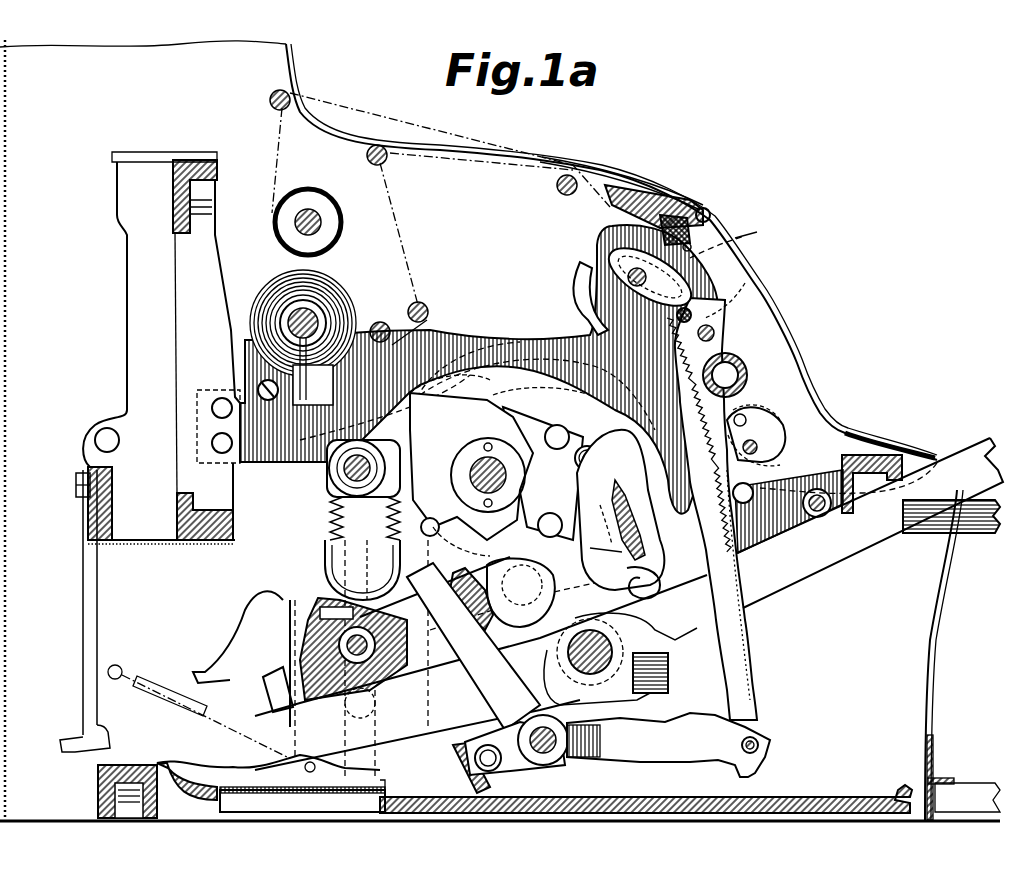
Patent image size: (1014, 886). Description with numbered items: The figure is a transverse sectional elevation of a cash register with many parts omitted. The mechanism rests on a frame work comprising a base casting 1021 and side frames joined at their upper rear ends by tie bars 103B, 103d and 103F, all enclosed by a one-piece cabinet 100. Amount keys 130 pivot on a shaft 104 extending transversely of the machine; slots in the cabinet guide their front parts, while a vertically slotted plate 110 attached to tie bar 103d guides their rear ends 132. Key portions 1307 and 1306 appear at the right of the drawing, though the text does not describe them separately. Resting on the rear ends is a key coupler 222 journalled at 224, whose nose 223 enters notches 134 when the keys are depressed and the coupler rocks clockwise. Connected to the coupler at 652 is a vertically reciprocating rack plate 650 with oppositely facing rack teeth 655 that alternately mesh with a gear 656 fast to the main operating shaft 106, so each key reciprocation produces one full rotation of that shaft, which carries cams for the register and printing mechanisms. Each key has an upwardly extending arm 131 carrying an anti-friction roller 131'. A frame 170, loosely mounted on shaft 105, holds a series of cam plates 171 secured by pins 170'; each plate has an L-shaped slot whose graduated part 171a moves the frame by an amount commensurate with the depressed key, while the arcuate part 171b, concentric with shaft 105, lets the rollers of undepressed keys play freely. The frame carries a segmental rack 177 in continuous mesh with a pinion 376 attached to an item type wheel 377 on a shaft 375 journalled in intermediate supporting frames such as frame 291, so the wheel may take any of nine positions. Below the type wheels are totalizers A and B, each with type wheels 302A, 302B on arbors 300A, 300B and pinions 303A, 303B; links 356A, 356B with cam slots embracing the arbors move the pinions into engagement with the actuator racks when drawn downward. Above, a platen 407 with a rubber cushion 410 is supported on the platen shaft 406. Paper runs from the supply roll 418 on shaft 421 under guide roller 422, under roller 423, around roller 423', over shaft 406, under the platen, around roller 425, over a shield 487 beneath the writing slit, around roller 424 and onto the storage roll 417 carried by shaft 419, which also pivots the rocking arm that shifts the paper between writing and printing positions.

The cabinet 100 is at (8, 102).
The tie bar 103B is at (195, 162).
The tie bar 103d is at (88, 515).
The tie bar 103F is at (878, 455).
The key shaft 104 is at (592, 630).
The transverse shaft 105 is at (471, 466).
The main operating shaft 106 is at (328, 478).
The vertically slotted plate 110 is at (120, 592).
The amount key 130 is at (629, 604).
The rail 1307 is at (629, 604).
The rail 1306 is at (960, 535).
The upwardly extending arm 131 is at (594, 446).
The anti-friction roller 131' is at (543, 471).
The rear ends of the keys 132 is at (257, 613).
The notches 134 is at (270, 672).
The frame 170 is at (455, 401).
The pins 170' is at (511, 479).
The cam plate 171 is at (625, 514).
The slot part 171a is at (603, 525).
The slot part 171b is at (609, 548).
The segmental rack 177 is at (578, 290).
The key coupler 222 is at (468, 578).
The nose 223 is at (310, 695).
The key coupler journal 224 is at (457, 578).
The intermediate supporting frame 291 is at (548, 333).
The arbor 300A is at (716, 333).
The arbor 300B is at (772, 458).
The totalizer type wheels 302A is at (746, 365).
The totalizer type wheels 302B is at (783, 440).
The totalizer pinions 303A is at (748, 286).
The totalizer pinions 303B is at (758, 420).
The link 356A is at (695, 312).
The link 356B is at (748, 440).
The shaft 375 is at (610, 252).
The pinion 376 is at (736, 245).
The item type wheel 377 is at (627, 275).
The platen shaft 406 is at (573, 176).
The platen 407 is at (655, 203).
The rubber cushion 410 is at (690, 205).
The storage roll 417 is at (340, 218).
The supply roll 418 is at (336, 305).
The shaft 419 is at (313, 212).
The shaft 421 is at (312, 313).
The paper guide roller 422 is at (427, 331).
The guide roller 423 is at (439, 313).
The guide roller 423' is at (470, 225).
The paper guide roller 424 is at (285, 108).
The roller 425 is at (758, 228).
The shield 487 is at (688, 225).
The rack plate 650 is at (326, 555).
The rack plate connection 652 is at (362, 569).
The rack teeth 655 is at (375, 519).
The gear 656 is at (355, 518).
The base casting 1021 is at (812, 797).
The totalizer A is at (750, 336).
The totalizer B is at (782, 420).